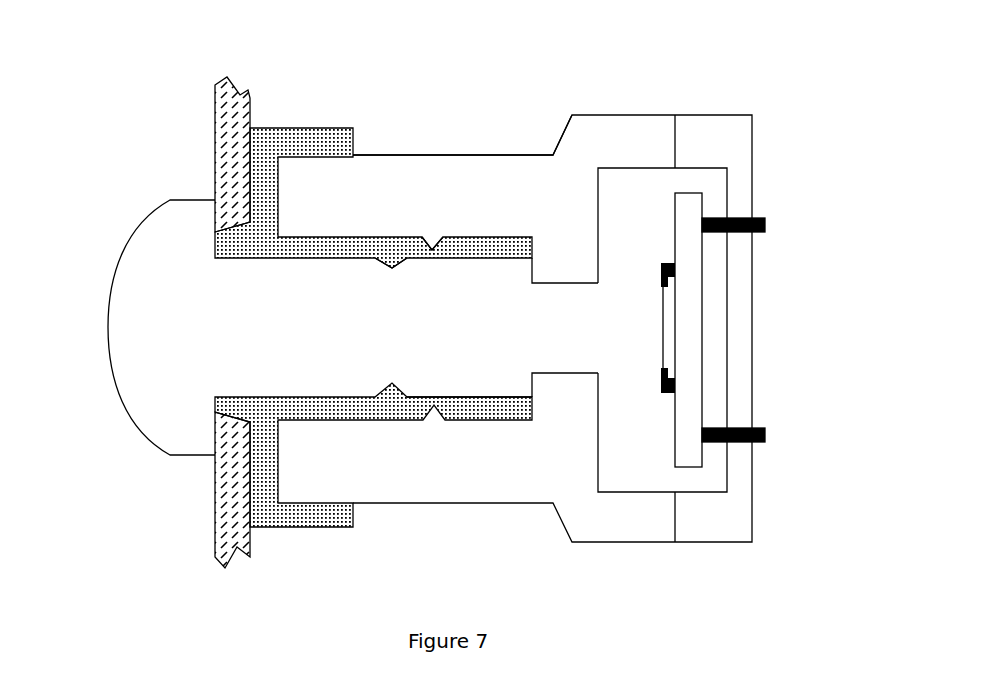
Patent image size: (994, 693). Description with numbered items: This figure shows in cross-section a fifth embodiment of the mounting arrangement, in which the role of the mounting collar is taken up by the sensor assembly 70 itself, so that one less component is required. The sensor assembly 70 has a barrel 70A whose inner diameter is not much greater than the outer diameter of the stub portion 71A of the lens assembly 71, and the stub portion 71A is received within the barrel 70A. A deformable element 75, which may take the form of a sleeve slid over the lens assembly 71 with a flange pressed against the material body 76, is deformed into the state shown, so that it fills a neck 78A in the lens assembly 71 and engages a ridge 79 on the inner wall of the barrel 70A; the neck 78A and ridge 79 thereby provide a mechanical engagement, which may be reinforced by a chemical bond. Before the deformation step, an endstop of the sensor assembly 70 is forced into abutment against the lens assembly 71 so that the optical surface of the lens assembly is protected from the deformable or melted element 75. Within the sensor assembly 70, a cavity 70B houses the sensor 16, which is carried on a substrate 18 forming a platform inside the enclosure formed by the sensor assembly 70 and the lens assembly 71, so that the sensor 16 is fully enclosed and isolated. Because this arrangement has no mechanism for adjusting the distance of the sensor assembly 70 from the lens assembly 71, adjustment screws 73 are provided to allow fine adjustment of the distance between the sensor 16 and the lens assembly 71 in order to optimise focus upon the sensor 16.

The sensor 16 is at (676, 310).
The substrate 18 is at (703, 400).
The sensor assembly 70 is at (545, 128).
The barrel 70A is at (365, 195).
The housing cavity 70B is at (572, 257).
The lens assembly 71 is at (158, 258).
The stub portion 71A is at (468, 375).
The adjustment screws 73 is at (766, 218).
The deformable element 75 is at (315, 127).
The material body 76 is at (250, 100).
The neck 78A is at (378, 272).
The ridge 79 is at (431, 250).